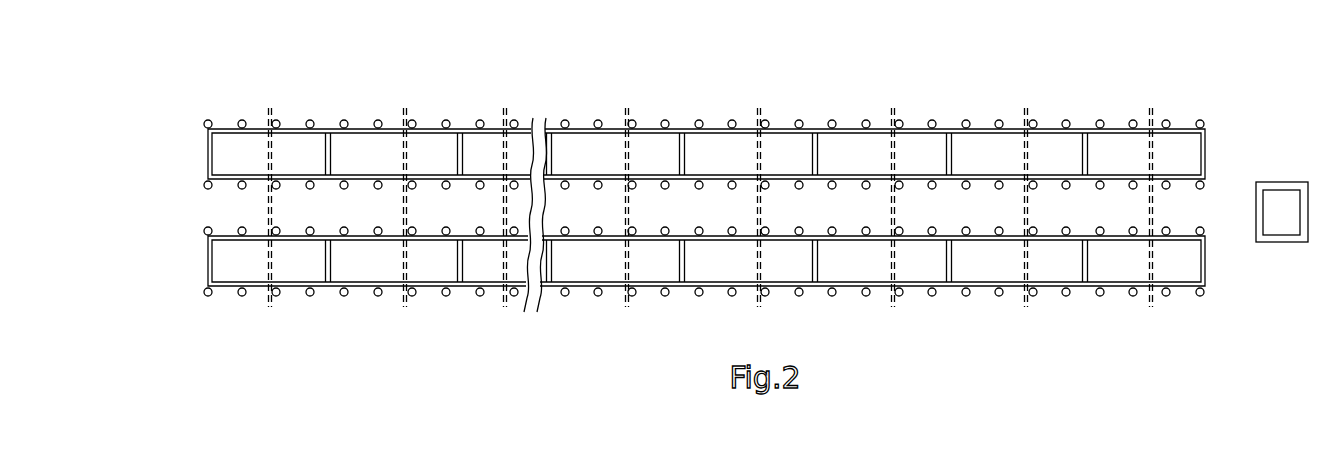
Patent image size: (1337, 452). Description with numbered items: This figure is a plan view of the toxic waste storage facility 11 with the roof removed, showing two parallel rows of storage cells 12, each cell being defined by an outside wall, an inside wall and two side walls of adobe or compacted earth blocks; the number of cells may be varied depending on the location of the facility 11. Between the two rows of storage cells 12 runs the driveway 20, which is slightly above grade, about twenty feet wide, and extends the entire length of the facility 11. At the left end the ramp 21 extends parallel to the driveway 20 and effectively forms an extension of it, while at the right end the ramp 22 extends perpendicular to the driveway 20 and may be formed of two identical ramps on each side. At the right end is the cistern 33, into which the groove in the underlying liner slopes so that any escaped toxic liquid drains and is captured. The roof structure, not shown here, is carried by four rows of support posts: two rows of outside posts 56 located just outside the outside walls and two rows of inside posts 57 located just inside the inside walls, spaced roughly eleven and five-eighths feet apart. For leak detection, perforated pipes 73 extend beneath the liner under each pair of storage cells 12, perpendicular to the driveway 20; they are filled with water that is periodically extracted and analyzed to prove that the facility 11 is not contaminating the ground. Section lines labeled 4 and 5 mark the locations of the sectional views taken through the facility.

The section line 4- 4 is at (188, 113).
The section line 5- 5 is at (1323, 107).
The toxic waste storage facility 11 is at (1034, 65).
The storage cell 12 is at (293, 150).
The driveway 20 is at (727, 210).
The ramp 21 is at (192, 210).
The ramp 22 is at (732, 207).
The cistern 33 is at (1280, 188).
The support post 56 is at (480, 120).
The support post 57 is at (414, 189).
The perforated pipe 73 is at (273, 207).